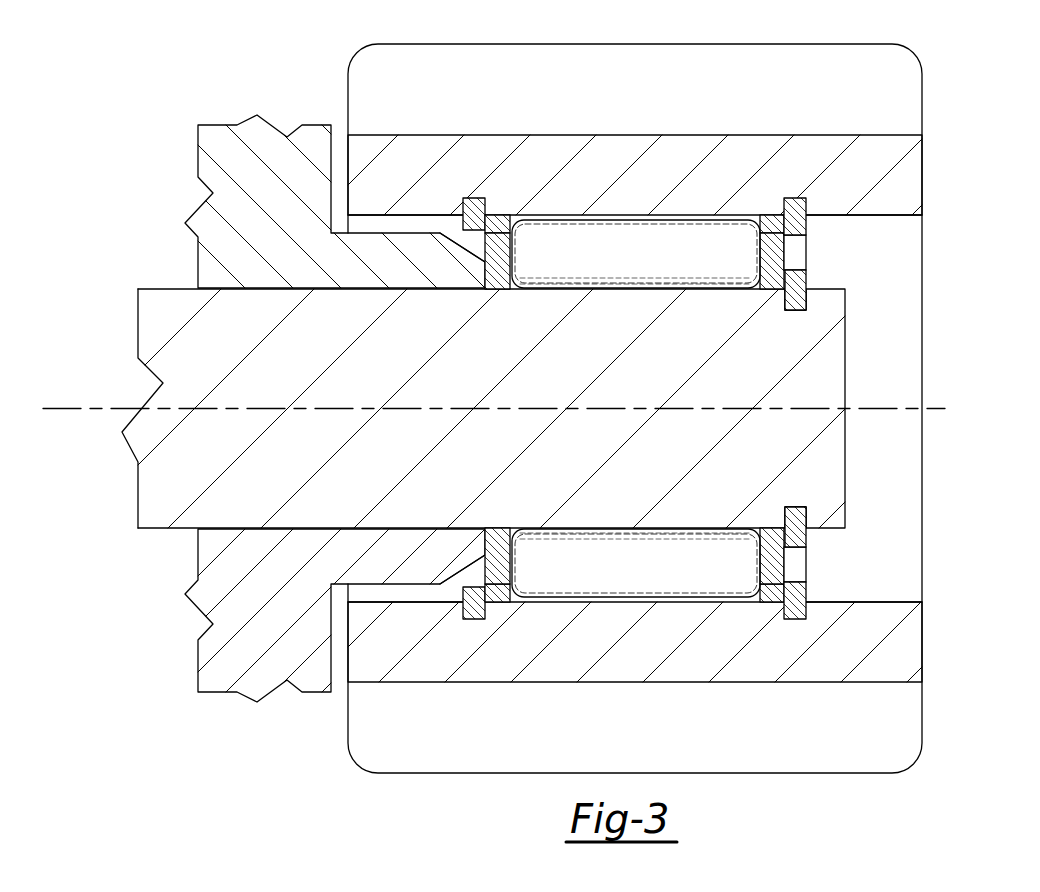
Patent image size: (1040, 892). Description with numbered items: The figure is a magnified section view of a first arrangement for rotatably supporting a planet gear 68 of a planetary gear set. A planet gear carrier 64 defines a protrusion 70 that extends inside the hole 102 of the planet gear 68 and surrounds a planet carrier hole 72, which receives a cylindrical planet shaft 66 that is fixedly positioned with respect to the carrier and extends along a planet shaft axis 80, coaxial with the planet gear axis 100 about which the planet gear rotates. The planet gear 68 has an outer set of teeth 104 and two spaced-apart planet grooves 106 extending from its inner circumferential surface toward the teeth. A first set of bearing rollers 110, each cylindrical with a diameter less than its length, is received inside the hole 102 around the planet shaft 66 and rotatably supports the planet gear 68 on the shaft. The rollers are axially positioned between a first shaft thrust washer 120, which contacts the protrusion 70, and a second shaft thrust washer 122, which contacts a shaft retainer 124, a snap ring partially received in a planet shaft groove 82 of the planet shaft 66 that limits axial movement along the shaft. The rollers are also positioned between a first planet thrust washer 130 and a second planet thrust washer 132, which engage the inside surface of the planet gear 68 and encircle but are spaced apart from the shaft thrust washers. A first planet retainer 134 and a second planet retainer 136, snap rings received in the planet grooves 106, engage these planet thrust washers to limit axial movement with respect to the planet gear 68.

The planet gear carrier 64 is at (198, 167).
The planet shaft 66 is at (650, 391).
The planet gear 68 is at (922, 135).
The protrusion 70 is at (462, 222).
The planet carrier hole 72 is at (262, 290).
The planet shaft axis 80 is at (870, 408).
The planet gear axis 100 is at (525, 389).
The planet shaft groove 82 is at (797, 312).
The hole 102 is at (891, 408).
The set of teeth 104 is at (913, 53).
The planet groove 106 is at (795, 620).
The first set of bearing rollers 110 is at (641, 254).
The first shaft thrust washer 120 is at (497, 290).
The second shaft thrust washer 122 is at (767, 290).
The shaft retainer 124 is at (806, 272).
The first planet thrust washer 130 is at (500, 215).
The second planet thrust washer 132 is at (768, 215).
The first planet retainer 134 is at (462, 234).
The second planet retainer 136 is at (806, 227).